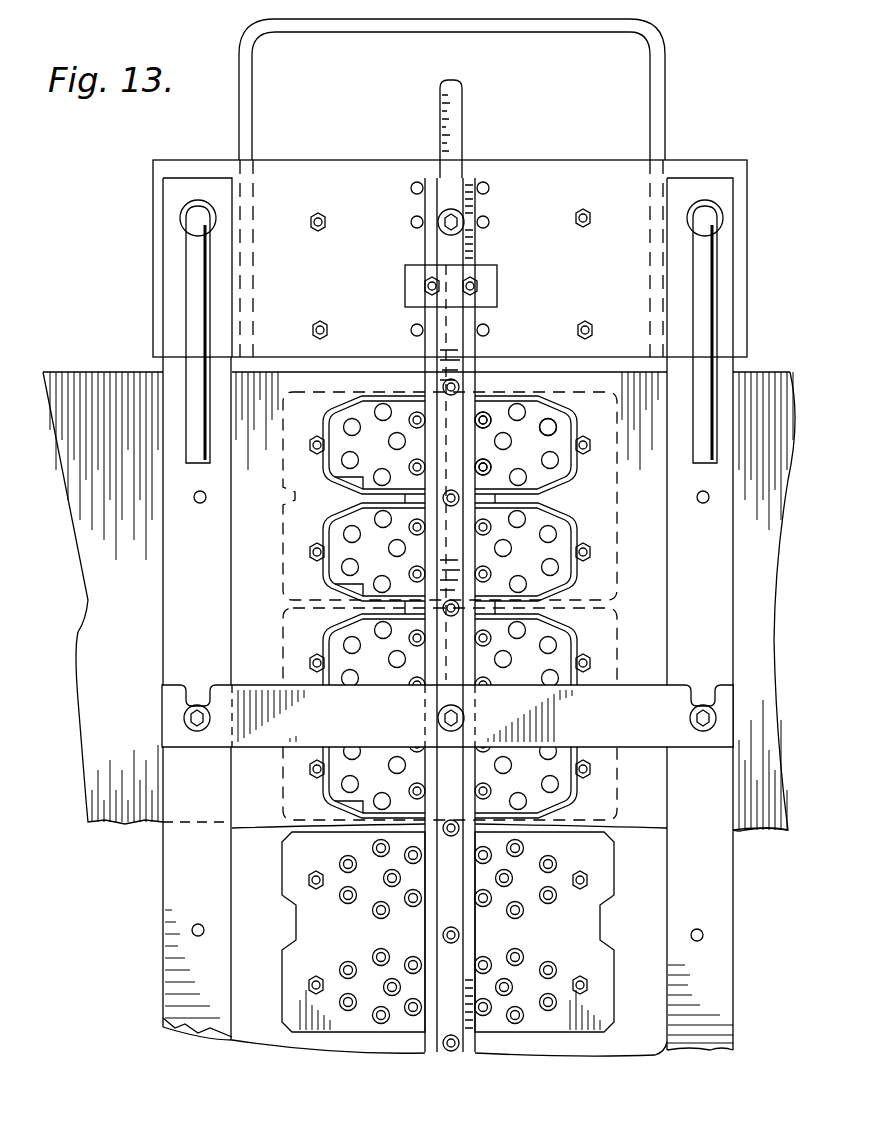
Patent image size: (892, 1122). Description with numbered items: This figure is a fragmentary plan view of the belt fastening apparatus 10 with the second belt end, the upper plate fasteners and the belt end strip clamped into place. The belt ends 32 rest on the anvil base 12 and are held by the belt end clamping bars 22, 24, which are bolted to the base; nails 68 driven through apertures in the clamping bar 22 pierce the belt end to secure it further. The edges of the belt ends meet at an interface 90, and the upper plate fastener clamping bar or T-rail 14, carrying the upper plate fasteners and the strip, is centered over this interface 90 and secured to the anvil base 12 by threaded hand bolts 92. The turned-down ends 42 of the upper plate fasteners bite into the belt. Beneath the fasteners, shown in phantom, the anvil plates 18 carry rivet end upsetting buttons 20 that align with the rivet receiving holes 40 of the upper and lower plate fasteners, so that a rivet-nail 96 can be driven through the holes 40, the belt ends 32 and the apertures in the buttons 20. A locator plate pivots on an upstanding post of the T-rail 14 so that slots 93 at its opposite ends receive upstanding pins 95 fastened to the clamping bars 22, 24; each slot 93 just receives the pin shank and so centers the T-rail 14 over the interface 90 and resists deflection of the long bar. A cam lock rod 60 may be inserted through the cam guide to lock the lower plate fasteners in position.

The apparatus 10 is at (706, 114).
The anvil base 12 is at (658, 366).
The upper plate fastener clamping bar or T-rail 14 is at (453, 190).
The anvil plates 18 is at (616, 898).
The rivet end upsetting portions or buttons 20 is at (555, 903).
The belt end clamping bar 22 is at (176, 256).
The belt end clamping bar 24 is at (732, 200).
The belt end 32 is at (72, 380).
The rivet receiving holes 40 is at (485, 457).
The ends of the upper plate fasteners 42 is at (576, 478).
The cam lock rod 60 is at (463, 102).
The nails 68 is at (194, 497).
The interface 90 is at (785, 385).
The threaded hand bolts 92 is at (462, 230).
The slots 93 is at (196, 696).
The upstanding pins 95 is at (197, 735).
The rivet-nail 96 is at (551, 418).